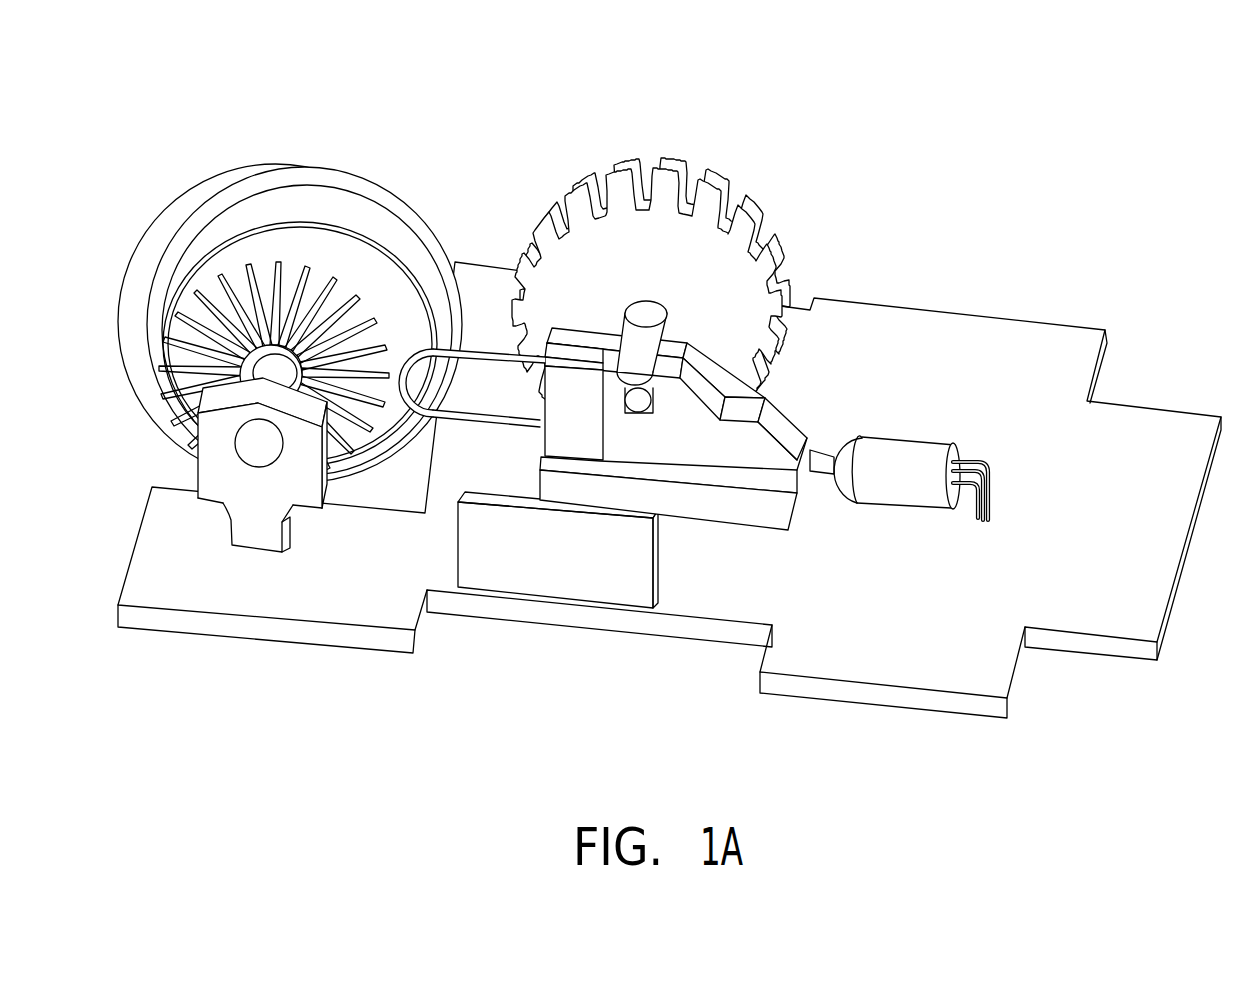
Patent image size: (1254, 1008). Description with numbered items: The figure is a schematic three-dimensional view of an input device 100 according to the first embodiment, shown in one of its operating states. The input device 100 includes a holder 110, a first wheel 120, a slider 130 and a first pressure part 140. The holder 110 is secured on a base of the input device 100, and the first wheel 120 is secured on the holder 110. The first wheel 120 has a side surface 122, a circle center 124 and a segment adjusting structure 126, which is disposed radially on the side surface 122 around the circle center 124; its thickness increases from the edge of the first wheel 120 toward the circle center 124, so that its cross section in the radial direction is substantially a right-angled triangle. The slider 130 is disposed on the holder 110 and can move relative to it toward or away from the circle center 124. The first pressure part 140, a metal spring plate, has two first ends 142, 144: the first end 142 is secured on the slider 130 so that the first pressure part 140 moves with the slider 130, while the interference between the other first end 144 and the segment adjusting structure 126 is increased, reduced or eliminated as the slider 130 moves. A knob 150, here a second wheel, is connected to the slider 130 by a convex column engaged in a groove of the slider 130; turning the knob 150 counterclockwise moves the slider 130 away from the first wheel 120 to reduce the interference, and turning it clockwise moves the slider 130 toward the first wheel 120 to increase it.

The input device 100 is at (1034, 112).
The holder 110 is at (907, 661).
The first wheel 120 is at (290, 268).
The side surface 122 is at (186, 284).
The circle center 124 is at (273, 362).
The segment adjusting structure 126 is at (313, 268).
The slider 130 is at (745, 452).
The first pressure part 140 is at (455, 431).
The first end 142 is at (530, 426).
The first end 144 is at (440, 422).
The knob 150 is at (678, 165).